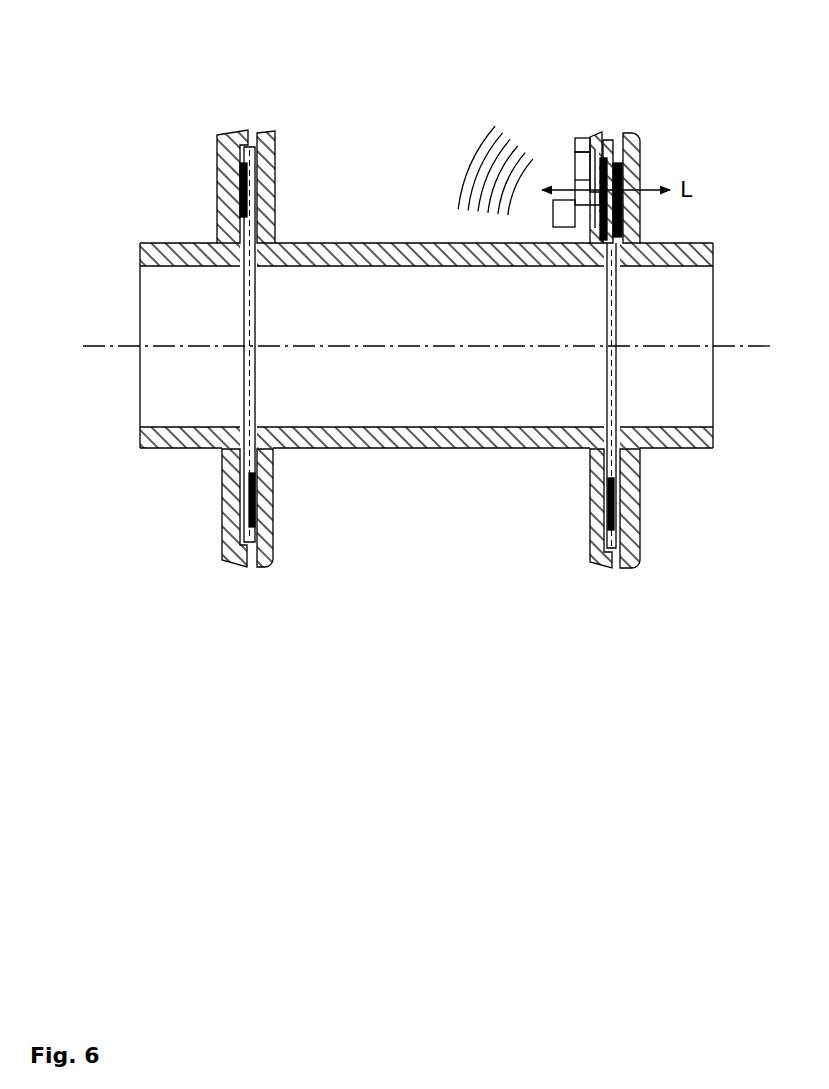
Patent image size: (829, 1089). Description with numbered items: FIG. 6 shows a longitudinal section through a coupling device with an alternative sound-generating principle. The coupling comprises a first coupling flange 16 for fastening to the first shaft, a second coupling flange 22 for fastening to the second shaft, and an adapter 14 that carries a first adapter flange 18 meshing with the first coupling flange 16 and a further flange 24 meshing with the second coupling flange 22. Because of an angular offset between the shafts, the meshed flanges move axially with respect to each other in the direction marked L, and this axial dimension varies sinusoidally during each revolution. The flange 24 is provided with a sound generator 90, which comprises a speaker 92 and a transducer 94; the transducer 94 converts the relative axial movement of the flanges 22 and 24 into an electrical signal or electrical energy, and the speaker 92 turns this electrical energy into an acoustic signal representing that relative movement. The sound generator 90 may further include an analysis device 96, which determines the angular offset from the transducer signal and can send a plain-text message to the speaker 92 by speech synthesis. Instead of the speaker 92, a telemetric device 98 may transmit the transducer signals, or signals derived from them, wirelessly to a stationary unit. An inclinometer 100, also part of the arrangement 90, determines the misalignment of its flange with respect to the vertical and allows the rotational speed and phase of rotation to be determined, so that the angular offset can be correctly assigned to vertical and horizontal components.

The adapter 14 is at (442, 469).
The first coupling flange 16 is at (227, 490).
The first adapter flange 18 is at (265, 492).
The second coupling flange 22 is at (638, 503).
The flange 24 is at (595, 503).
The sound generator 90 is at (520, 227).
The speaker 92 is at (563, 223).
The transducer 94 is at (607, 177).
The analysis device 96 is at (585, 210).
The telemetric device 98 is at (577, 143).
The inclinometer 100 is at (583, 165).